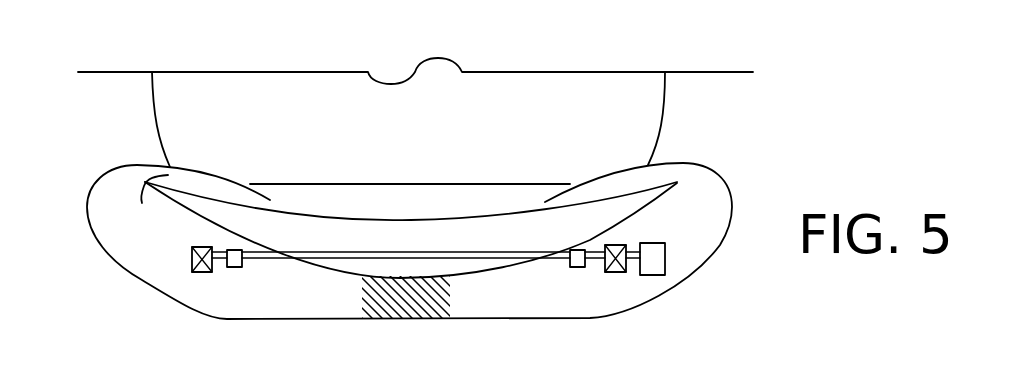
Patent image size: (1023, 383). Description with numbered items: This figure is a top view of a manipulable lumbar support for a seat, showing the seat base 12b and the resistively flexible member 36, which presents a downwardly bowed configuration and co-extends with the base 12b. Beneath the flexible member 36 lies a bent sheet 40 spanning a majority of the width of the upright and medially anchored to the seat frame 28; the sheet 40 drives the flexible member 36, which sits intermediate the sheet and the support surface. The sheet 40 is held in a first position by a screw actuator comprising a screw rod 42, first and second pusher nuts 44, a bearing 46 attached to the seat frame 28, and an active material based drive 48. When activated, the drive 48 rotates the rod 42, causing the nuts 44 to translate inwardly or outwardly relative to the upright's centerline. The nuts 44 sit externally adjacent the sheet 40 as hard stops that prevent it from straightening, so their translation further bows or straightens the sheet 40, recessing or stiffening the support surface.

The base 12b is at (452, 140).
The flexible member 36 is at (650, 187).
The bent sheet 40 is at (502, 275).
The seat frame 28 is at (414, 318).
The bearing 46 is at (190, 271).
The screw rod 42 is at (257, 267).
The pusher nuts 44 is at (577, 267).
The active material based drive 48 is at (667, 253).